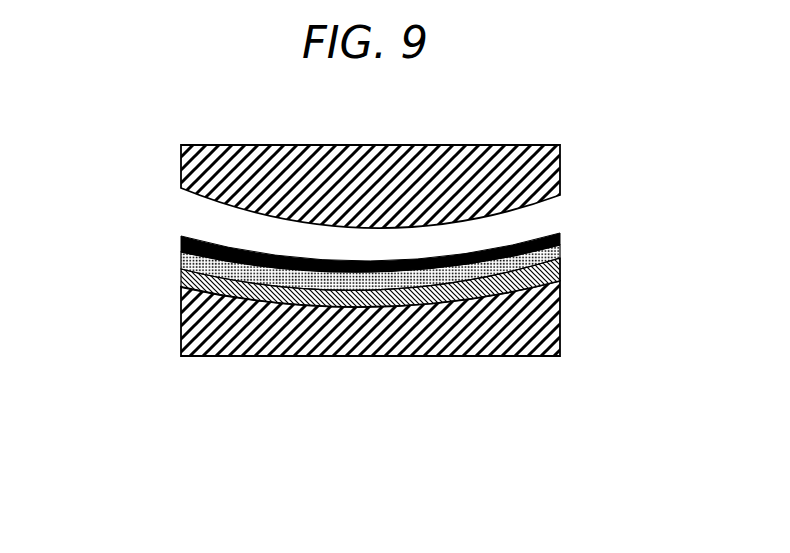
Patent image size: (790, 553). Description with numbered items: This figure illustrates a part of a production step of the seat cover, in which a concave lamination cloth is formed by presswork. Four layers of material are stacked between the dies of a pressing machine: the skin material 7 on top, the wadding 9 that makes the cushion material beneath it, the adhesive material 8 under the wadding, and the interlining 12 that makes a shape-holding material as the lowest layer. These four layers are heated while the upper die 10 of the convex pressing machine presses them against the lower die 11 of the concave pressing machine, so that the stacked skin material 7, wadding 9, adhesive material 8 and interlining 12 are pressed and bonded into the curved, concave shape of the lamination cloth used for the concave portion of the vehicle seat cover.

The skin material 7 is at (530, 240).
The adhesive material 8 is at (557, 270).
The wadding 9 is at (553, 255).
The upper die 10 is at (190, 168).
The lower die 11 is at (190, 322).
The interlining 12 is at (558, 274).